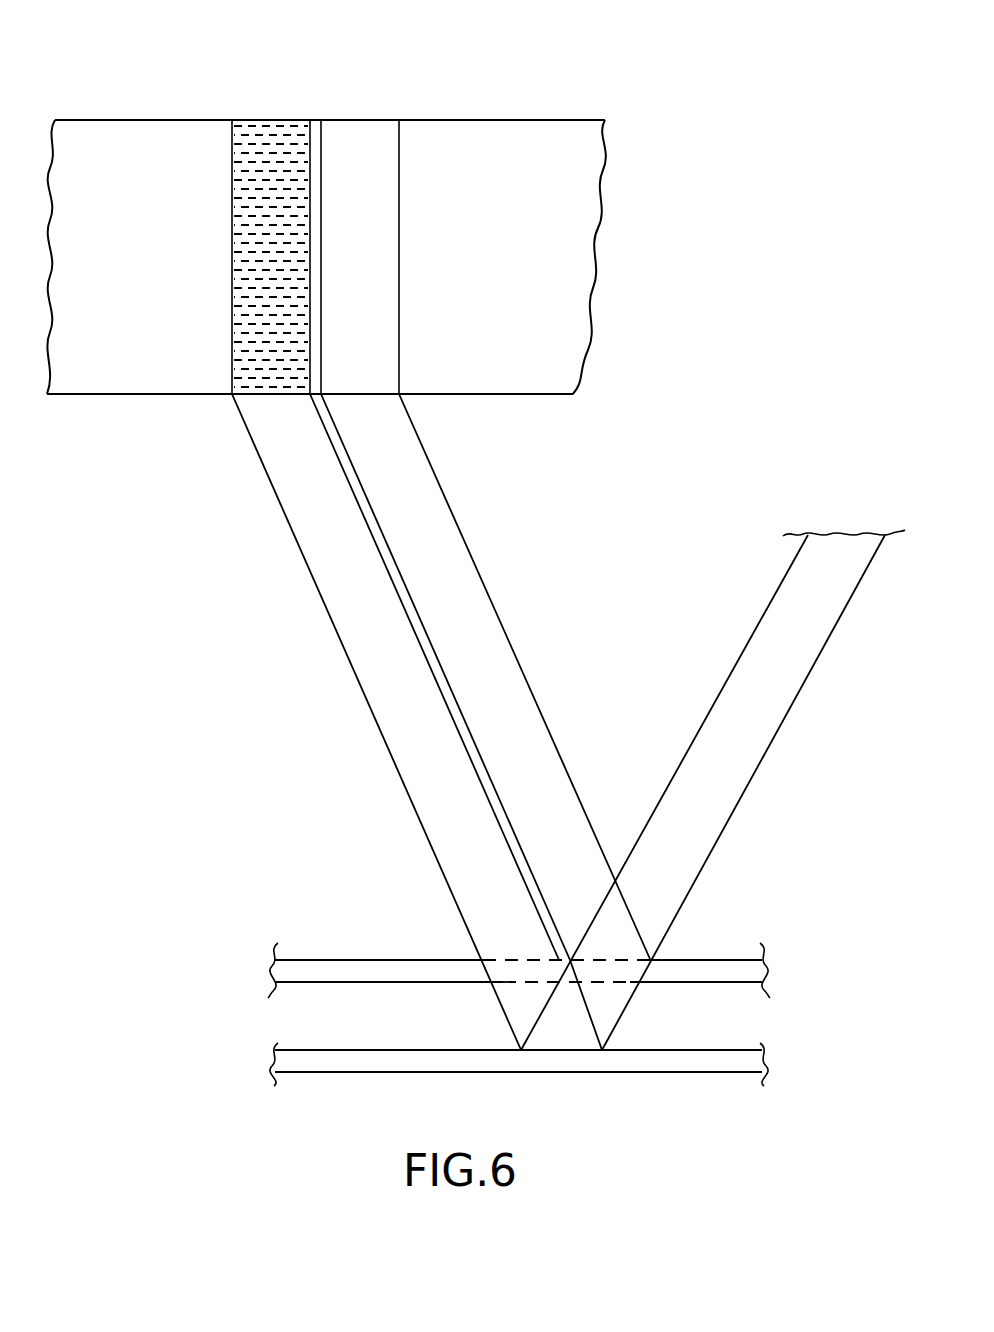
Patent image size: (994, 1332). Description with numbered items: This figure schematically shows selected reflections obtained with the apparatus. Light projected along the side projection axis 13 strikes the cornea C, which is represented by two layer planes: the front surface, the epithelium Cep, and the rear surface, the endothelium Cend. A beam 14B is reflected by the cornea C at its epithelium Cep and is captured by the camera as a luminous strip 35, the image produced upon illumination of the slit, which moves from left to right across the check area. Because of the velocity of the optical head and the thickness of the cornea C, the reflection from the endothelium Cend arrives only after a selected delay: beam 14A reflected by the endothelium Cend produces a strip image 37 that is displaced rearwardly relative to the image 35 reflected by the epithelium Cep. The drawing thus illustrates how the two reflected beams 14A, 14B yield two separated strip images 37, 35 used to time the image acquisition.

The strip image 37 is at (265, 177).
The luminous strip 35 is at (365, 173).
The beam reflected by endothelium 14A is at (394, 707).
The beam reflected by epithelium 14B is at (476, 658).
The side projection axis 13 is at (760, 695).
The epithelium Cep is at (742, 969).
The endothelium Cend is at (738, 1057).
The cornea C is at (266, 1022).